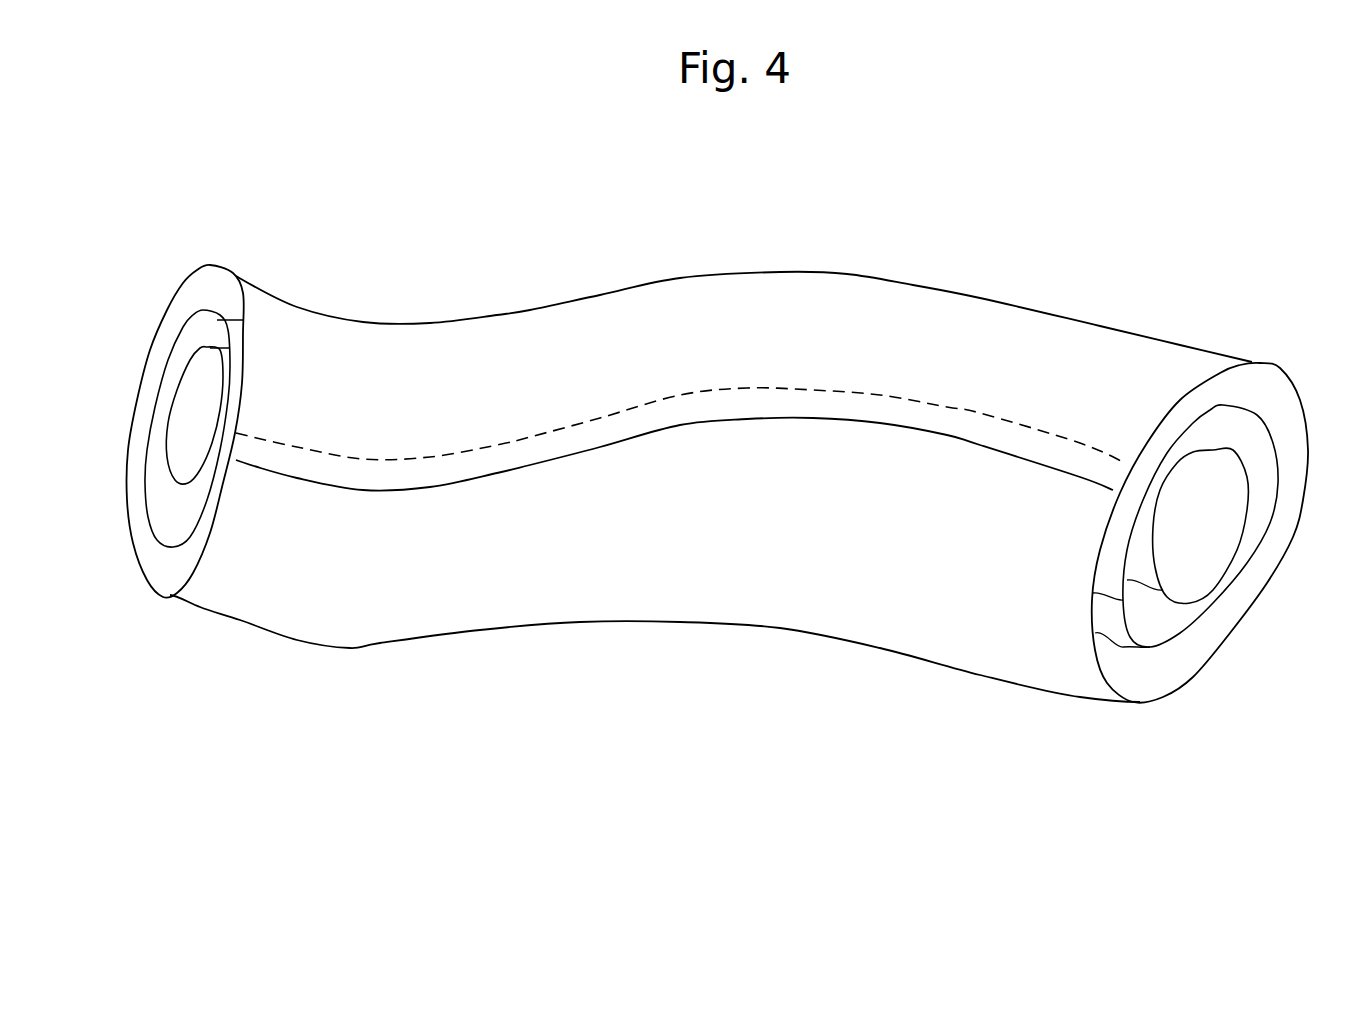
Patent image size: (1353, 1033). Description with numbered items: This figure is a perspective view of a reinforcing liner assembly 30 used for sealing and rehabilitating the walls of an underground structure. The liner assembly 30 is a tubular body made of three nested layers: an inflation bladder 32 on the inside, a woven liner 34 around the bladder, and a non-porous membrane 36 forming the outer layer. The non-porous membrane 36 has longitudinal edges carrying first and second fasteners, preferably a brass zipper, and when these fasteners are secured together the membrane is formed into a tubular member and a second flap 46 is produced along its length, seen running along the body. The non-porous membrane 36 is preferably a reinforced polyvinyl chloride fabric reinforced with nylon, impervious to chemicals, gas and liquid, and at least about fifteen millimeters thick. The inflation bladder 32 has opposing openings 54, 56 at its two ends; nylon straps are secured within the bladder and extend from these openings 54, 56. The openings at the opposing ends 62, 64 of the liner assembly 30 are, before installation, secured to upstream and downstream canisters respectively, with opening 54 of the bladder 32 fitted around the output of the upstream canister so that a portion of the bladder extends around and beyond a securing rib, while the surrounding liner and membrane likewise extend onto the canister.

The reinforcing liner assembly 30 is at (966, 222).
The inflation bladder 32 is at (1168, 462).
The woven liner 34 is at (1190, 412).
The non-porous membrane 36 is at (1150, 362).
The second flap 46 is at (358, 477).
The opening of bladder 54 is at (1213, 537).
The opening of bladder 56 is at (188, 411).
The opposing end of liner assembly 62 is at (1297, 628).
The opposing end of liner assembly 64 is at (97, 562).